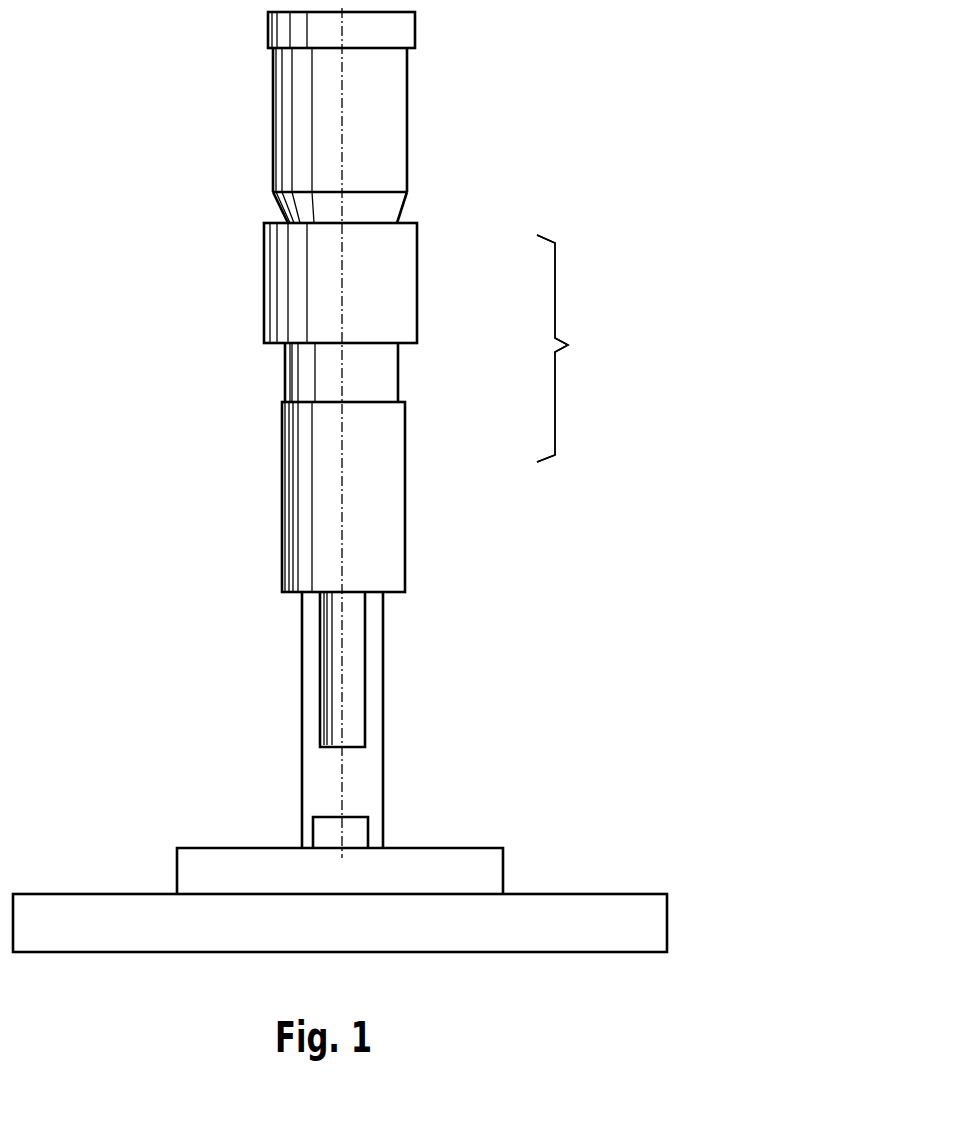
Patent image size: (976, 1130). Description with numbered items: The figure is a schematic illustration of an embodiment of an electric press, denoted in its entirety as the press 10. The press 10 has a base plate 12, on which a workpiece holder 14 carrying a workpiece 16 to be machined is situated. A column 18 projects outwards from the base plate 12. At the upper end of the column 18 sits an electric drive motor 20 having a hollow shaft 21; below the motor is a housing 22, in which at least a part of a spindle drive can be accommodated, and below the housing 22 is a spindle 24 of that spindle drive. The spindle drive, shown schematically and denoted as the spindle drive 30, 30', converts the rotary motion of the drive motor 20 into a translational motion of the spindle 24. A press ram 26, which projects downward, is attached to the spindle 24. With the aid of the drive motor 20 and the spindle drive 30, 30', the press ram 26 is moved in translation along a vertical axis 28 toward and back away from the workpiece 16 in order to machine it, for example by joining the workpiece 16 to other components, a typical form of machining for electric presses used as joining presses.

The press 10 is at (584, 148).
The base plate 12 is at (608, 920).
The workpiece holder 14 is at (477, 868).
The workpiece 16 is at (355, 833).
The column 18 is at (374, 663).
The electric drive motor 20 is at (392, 125).
The hollow shaft 21 is at (388, 208).
The housing 22 is at (403, 291).
The spindle 24 is at (400, 477).
The press ram 26 is at (337, 623).
The vertical axis 28 is at (338, 762).
The spindle drive 30 is at (590, 348).
The spindle drive 30' is at (552, 348).